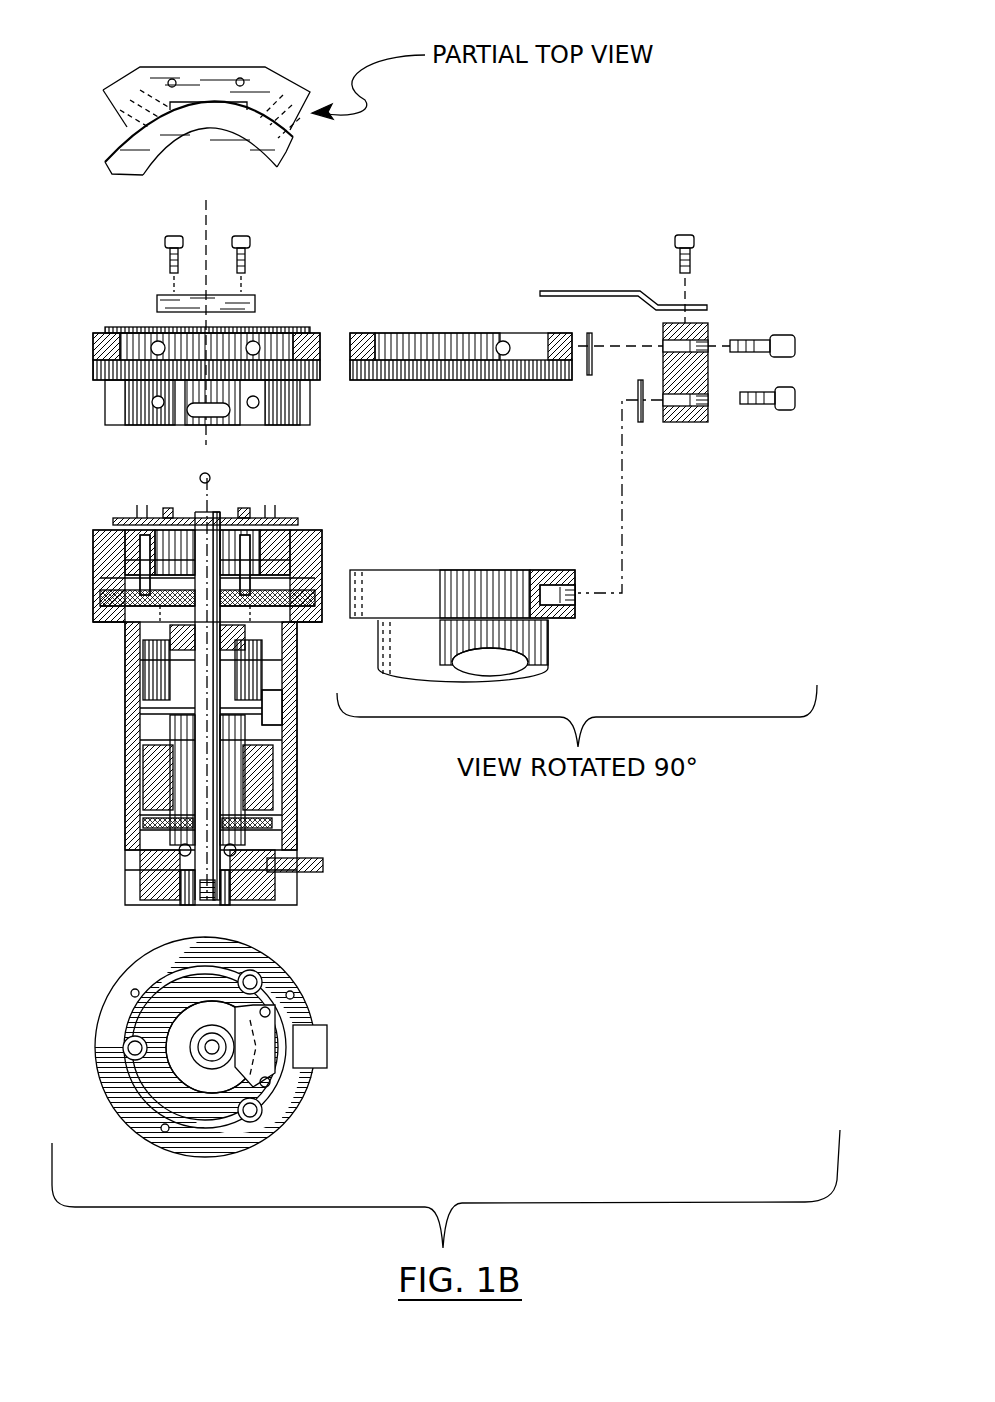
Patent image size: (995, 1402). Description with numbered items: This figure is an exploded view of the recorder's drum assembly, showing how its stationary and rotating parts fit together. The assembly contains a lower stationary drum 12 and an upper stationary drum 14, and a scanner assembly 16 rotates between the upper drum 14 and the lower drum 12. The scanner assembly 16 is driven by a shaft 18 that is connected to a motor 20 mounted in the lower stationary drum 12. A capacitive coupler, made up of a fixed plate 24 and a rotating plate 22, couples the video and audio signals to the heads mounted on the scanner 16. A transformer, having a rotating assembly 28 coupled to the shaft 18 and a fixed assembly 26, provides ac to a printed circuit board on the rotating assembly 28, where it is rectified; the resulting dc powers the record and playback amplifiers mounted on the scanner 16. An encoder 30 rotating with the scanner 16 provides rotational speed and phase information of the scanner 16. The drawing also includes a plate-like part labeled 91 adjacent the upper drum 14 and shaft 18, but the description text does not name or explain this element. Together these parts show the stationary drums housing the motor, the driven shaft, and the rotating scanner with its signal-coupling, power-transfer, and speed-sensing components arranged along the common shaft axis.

The lower stationary drum 12 is at (575, 614).
The upper stationary drum 14 is at (277, 153).
The scanner assembly 16 is at (322, 560).
The shaft 18 is at (212, 512).
The motor 20 is at (132, 788).
The rotating plate 22 is at (98, 578).
The fixed plate 24 is at (300, 613).
The fixed assembly 26 is at (128, 674).
The rotating assembly 28 is at (262, 690).
The encoder 30 is at (310, 1037).
The cover plate 91 is at (283, 518).